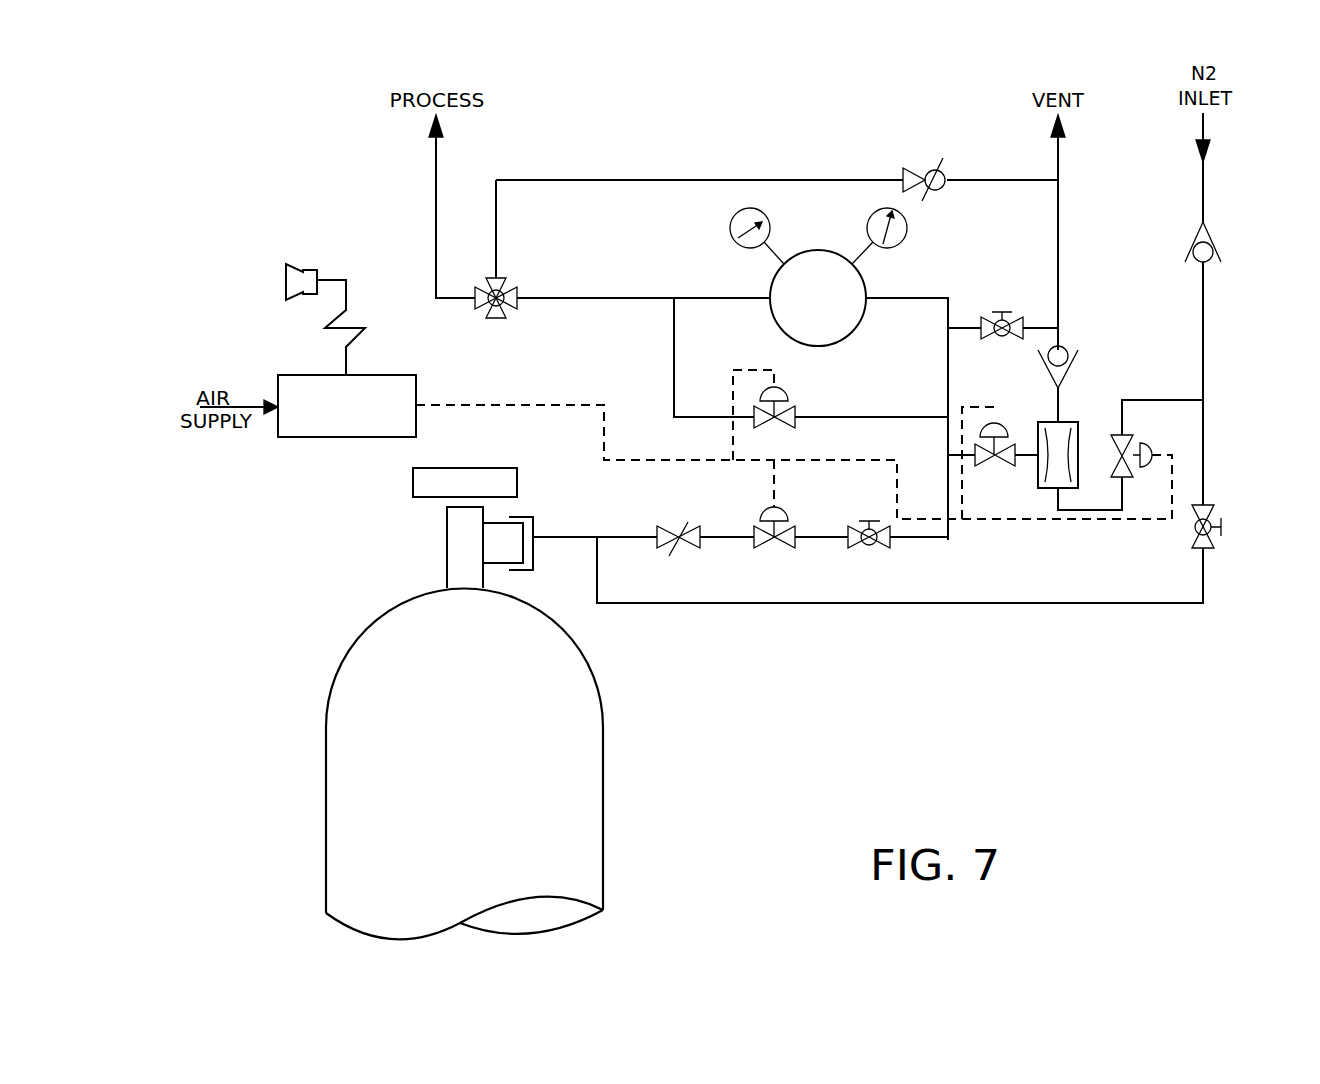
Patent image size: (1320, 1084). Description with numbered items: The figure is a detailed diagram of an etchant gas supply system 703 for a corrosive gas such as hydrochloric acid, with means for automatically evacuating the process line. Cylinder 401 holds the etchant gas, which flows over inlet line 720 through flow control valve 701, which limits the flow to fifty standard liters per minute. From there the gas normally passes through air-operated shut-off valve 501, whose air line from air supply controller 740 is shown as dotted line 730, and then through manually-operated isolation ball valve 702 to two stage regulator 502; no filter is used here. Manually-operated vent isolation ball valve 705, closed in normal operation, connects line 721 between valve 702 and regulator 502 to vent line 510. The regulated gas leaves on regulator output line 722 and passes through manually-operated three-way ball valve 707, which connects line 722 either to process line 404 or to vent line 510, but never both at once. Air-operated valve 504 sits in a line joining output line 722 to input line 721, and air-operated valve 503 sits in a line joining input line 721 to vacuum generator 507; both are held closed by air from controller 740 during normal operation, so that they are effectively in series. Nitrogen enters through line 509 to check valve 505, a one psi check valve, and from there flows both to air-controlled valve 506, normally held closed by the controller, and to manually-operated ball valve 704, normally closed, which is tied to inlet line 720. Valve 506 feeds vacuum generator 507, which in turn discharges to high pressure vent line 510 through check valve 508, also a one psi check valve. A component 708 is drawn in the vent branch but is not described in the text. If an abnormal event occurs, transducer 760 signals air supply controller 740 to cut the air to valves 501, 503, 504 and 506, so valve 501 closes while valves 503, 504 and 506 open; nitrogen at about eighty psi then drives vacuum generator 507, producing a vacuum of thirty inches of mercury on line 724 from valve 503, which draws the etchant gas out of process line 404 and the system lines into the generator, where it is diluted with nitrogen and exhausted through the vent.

The cylinder 401 is at (603, 748).
The process line 404 is at (436, 150).
The air-operated shut-off valve 501 is at (781, 548).
The two stage regulator 502 is at (866, 286).
The air-operated valve 503 is at (1000, 421).
The air-operated valve 504 is at (778, 428).
The check valve 505 is at (1215, 240).
The air-controlled valve 506 is at (1130, 441).
The vacuum generator 507 is at (1080, 433).
The check valve 508 is at (1066, 346).
The line 509 is at (1203, 165).
The vent line 510 is at (1058, 155).
The flow control valve 701 is at (680, 526).
The manually-operated isolation ball valve 702 is at (886, 548).
The gas supply system 703 is at (731, 172).
The manually-operated ball valve 704 is at (1214, 516).
The manually-operated vent isolation ball valve 705 is at (993, 346).
The manually-operated three-way ball valve 707 is at (508, 288).
The check valve 708 is at (916, 172).
The inlet line 720 is at (586, 534).
The regulator input line 721 is at (948, 358).
The regulator output line 722 is at (627, 297).
The line 724 is at (1030, 470).
The air line 730 is at (862, 462).
The air supply controller 740 is at (378, 375).
The transducer 760 is at (318, 273).